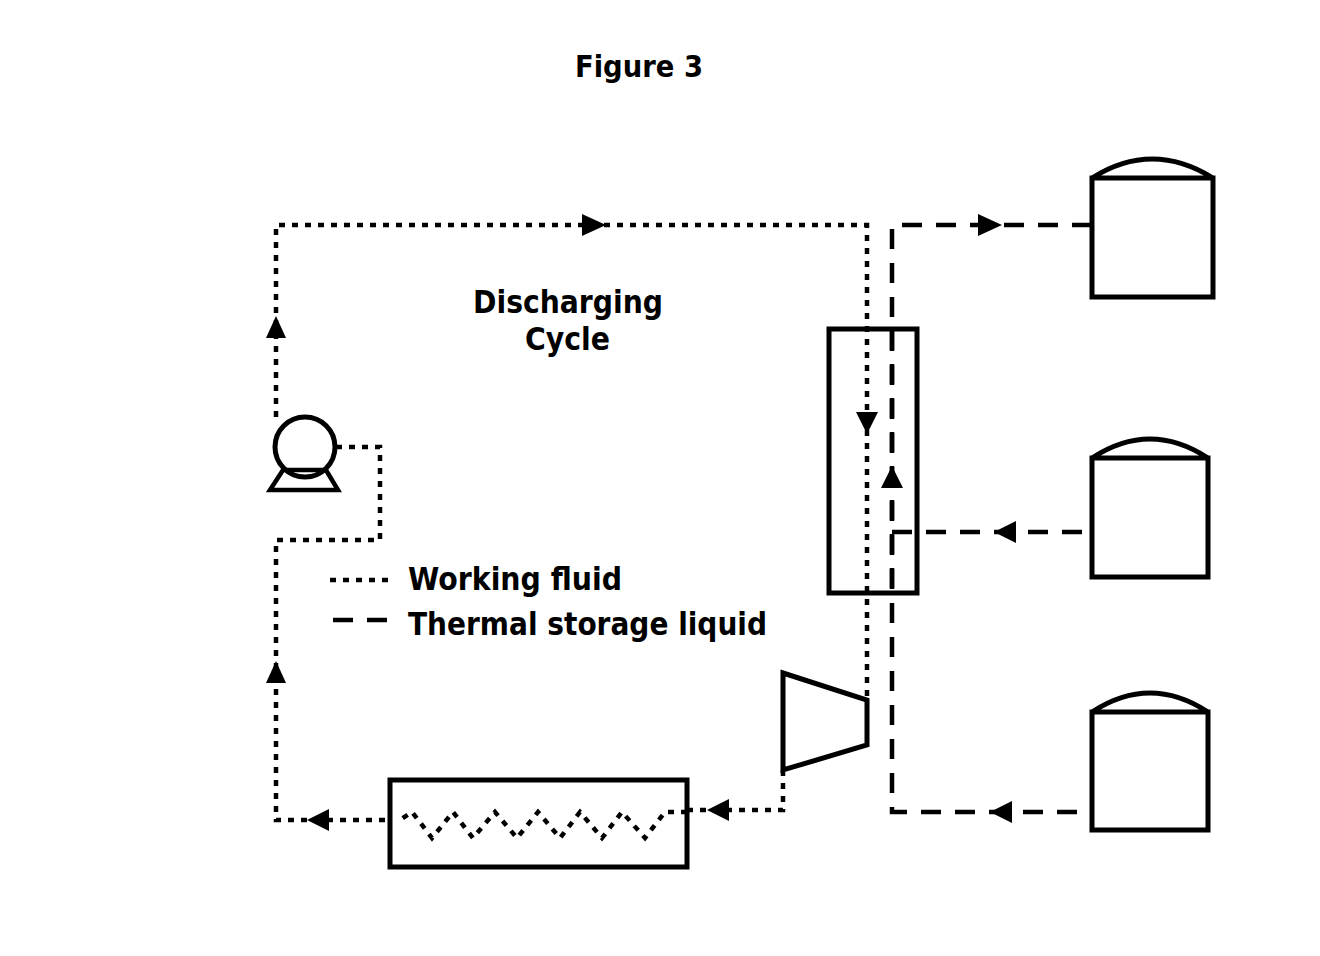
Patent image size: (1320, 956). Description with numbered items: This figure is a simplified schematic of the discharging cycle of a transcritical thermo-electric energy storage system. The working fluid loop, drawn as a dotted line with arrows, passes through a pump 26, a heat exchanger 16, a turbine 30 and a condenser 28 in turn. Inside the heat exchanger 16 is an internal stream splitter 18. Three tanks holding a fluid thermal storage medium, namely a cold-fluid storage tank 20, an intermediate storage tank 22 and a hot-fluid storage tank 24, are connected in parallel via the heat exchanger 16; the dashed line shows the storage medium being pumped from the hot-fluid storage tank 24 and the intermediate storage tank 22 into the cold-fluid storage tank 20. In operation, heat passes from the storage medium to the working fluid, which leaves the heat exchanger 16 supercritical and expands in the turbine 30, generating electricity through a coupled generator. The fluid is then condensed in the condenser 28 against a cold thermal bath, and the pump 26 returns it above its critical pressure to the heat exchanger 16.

The heat exchanger 16 is at (829, 430).
The internal stream splitter 18 is at (895, 525).
The cold-fluid storage tank 20 is at (1218, 218).
The intermediate storage tank 22 is at (1213, 513).
The hot-fluid storage tank 24 is at (1213, 765).
The pump 26 is at (274, 447).
The condenser 28 is at (424, 780).
The turbine 30 is at (783, 705).